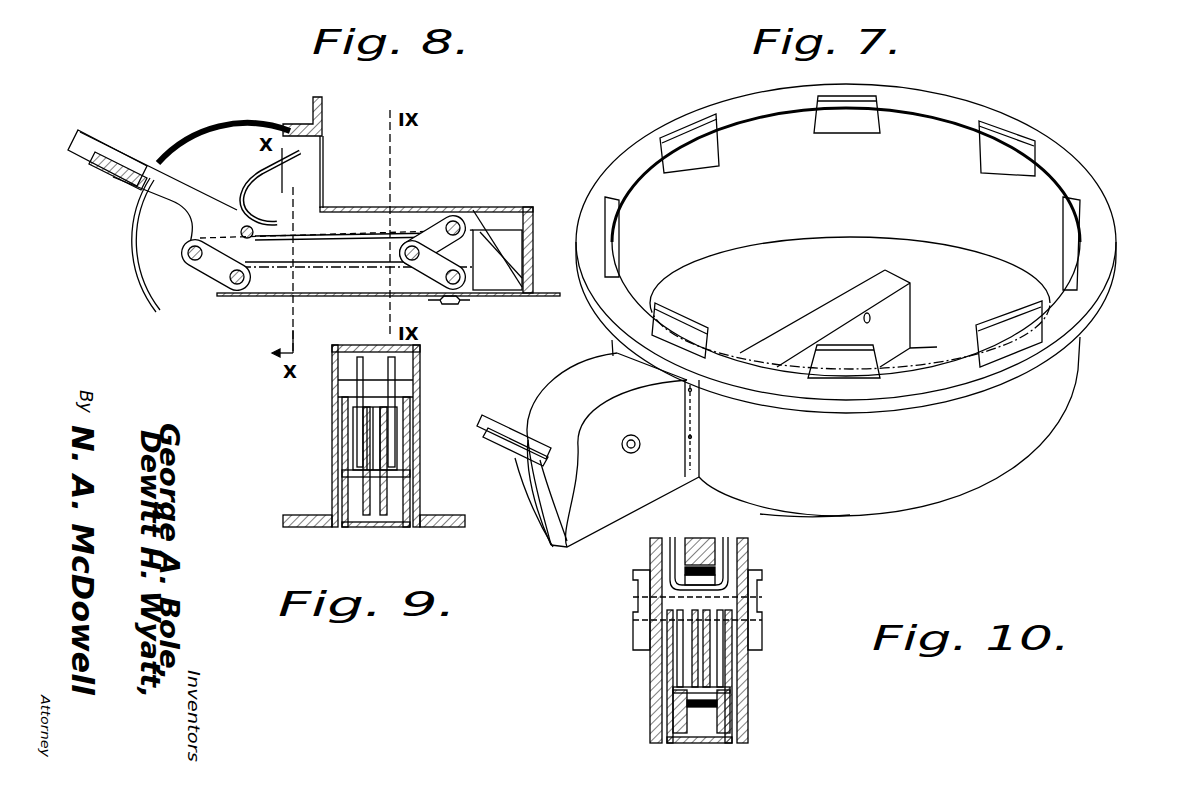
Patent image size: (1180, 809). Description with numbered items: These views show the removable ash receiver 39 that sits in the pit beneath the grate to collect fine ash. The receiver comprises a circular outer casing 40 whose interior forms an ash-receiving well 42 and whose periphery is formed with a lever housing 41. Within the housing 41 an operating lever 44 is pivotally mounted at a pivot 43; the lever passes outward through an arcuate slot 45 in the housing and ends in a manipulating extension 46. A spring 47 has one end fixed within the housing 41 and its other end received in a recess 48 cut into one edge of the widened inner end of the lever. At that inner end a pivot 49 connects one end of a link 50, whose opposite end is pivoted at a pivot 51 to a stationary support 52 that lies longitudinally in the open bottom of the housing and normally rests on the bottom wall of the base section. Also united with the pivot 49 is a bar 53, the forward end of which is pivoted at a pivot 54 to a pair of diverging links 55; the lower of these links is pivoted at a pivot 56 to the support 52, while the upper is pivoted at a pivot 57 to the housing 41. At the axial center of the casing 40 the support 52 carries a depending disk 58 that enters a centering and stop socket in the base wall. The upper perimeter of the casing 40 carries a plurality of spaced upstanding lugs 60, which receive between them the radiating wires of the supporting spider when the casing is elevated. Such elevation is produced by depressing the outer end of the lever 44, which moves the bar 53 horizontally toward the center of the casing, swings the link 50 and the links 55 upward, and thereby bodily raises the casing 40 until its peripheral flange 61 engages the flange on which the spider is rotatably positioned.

In FIG. 7, the removable ash receiver 39 is at (846, 376).
In FIG. 7, the circular outer casing 40 is at (833, 513).
In FIG. 8, the lever housing 41 is at (345, 184).
In FIG. 9, the lever housing 41 is at (408, 436).
In FIG. 7, the lever housing 41 is at (613, 450).
In FIG. 10, the lever housing 41 is at (731, 640).
In FIG. 7, the ash-receiving well 42 is at (846, 236).
In FIG. 8, the pivot 43 is at (224, 217).
In FIG. 10, the pivot 43 is at (723, 610).
In FIG. 8, the operating lever 44 is at (158, 191).
In FIG. 7, the operating lever 44 is at (528, 510).
In FIG. 10, the operating lever 44 is at (647, 591).
In FIG. 8, the arcuate slot 45 is at (126, 245).
In FIG. 7, the arcuate slot 45 is at (549, 515).
In FIG. 8, the manipulating extension 46 is at (107, 167).
In FIG. 7, the manipulating extension 46 is at (513, 460).
In FIG. 8, the spring 47 is at (311, 179).
In FIG. 10, the spring 47 is at (699, 543).
In FIG. 8, the recess 48 is at (336, 211).
In FIG. 8, the pivot 49 is at (187, 289).
In FIG. 10, the pivot 49 is at (745, 648).
In FIG. 8, the link 50 is at (194, 297).
In FIG. 10, the link 50 is at (714, 690).
In FIG. 8, the pivot 51 is at (245, 297).
In FIG. 10, the pivot 51 is at (739, 700).
In FIG. 8, the stationary support 52 is at (388, 302).
In FIG. 9, the stationary support 52 is at (374, 478).
In FIG. 10, the stationary support 52 is at (740, 676).
In FIG. 8, the bar 53 is at (328, 305).
In FIG. 9, the bar 53 is at (336, 461).
In FIG. 10, the bar 53 is at (656, 648).
In FIG. 8, the pivot 54 is at (381, 253).
In FIG. 8, the diverging links 55 is at (431, 248).
In FIG. 9, the diverging links 55 is at (378, 423).
In FIG. 8, the pivot 56 is at (476, 296).
In FIG. 9, the pivot 56 is at (403, 477).
In FIG. 8, the pivot 57 is at (481, 205).
In FIG. 9, the pivot 57 is at (336, 425).
In FIG. 8, the depending disk 58 is at (467, 319).
In FIG. 7, the upstanding lugs 60 is at (842, 244).
In FIG. 7, the peripheral flange 61 is at (864, 327).